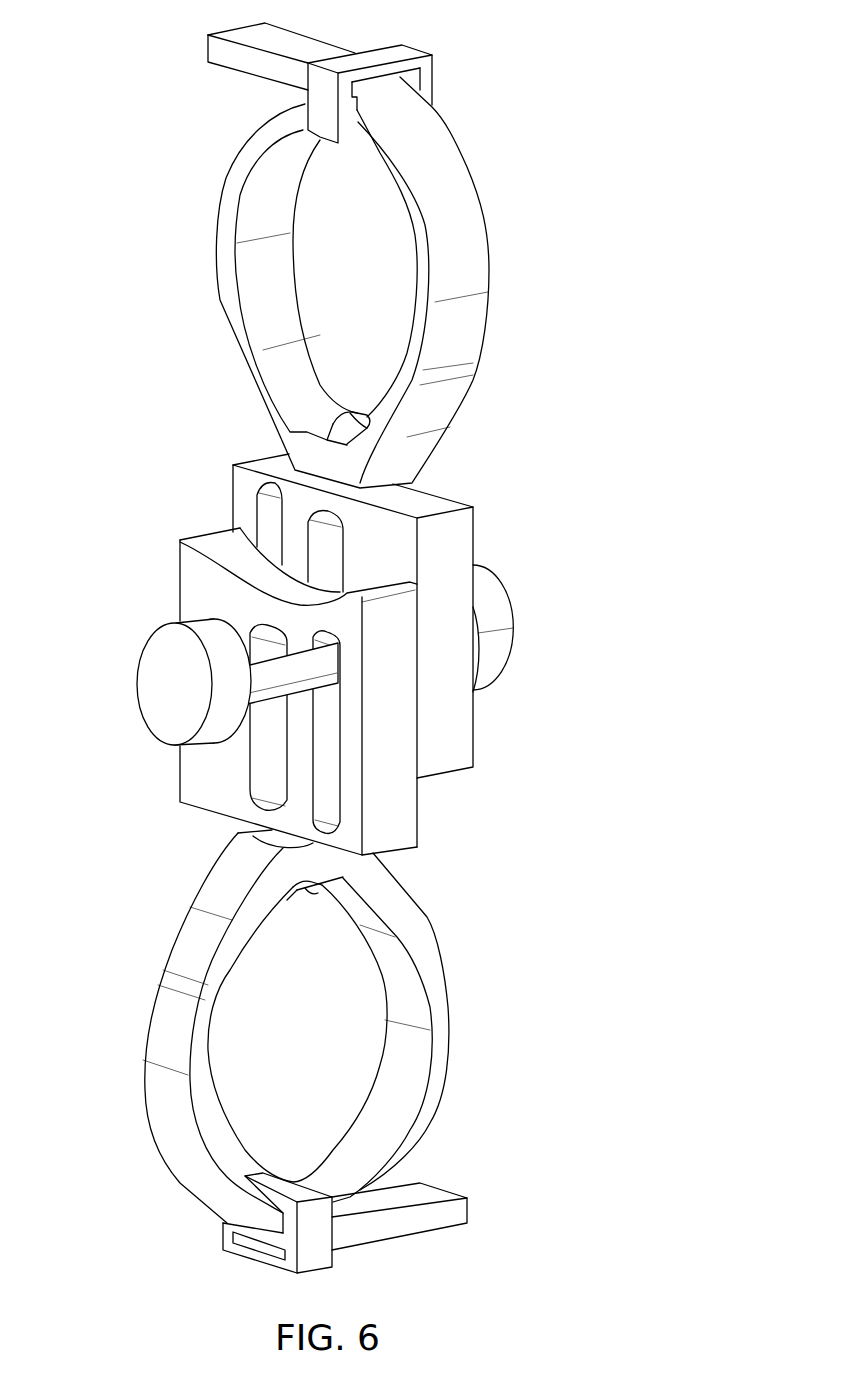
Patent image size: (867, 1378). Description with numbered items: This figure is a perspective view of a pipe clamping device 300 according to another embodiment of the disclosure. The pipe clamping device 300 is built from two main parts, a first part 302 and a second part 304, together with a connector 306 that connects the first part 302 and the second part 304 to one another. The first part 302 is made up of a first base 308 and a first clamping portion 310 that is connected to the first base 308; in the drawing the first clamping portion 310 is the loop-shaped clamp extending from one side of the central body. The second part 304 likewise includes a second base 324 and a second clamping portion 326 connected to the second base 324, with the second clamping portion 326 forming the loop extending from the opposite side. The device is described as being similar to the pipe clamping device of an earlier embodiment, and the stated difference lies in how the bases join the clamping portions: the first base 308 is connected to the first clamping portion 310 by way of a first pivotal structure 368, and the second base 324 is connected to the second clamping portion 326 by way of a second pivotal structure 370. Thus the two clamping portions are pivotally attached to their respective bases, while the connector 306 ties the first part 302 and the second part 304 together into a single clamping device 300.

The pipe clamping device 300 is at (590, 31).
The first part 302 is at (492, 483).
The second part 304 is at (143, 891).
The connector 306 is at (160, 682).
The first base 308 is at (460, 718).
The first clamping portion 310 is at (485, 348).
The second base 324 is at (178, 778).
The second clamping portion 326 is at (178, 1145).
The first pivotal structure 368 is at (337, 416).
The second pivotal structure 370 is at (310, 893).